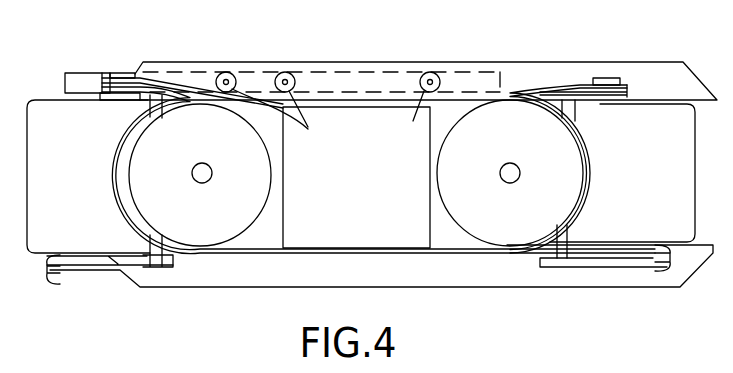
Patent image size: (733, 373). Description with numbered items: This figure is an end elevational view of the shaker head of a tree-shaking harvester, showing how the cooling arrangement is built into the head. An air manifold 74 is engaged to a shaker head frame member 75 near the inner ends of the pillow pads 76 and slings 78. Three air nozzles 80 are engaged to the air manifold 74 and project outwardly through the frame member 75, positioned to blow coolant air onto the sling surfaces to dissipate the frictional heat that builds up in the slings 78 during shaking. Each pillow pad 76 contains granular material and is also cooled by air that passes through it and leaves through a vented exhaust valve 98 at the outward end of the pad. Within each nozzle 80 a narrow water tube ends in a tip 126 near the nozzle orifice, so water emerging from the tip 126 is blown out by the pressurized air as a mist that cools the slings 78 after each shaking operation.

The air manifold 74 is at (357, 70).
The shaker head frame member 75 is at (553, 62).
The pillow pad 76 is at (215, 236).
The sling 78 is at (256, 251).
The air nozzle 80 is at (282, 72).
The vented exhaust valve 98 is at (194, 169).
The tip 126 is at (332, 118).